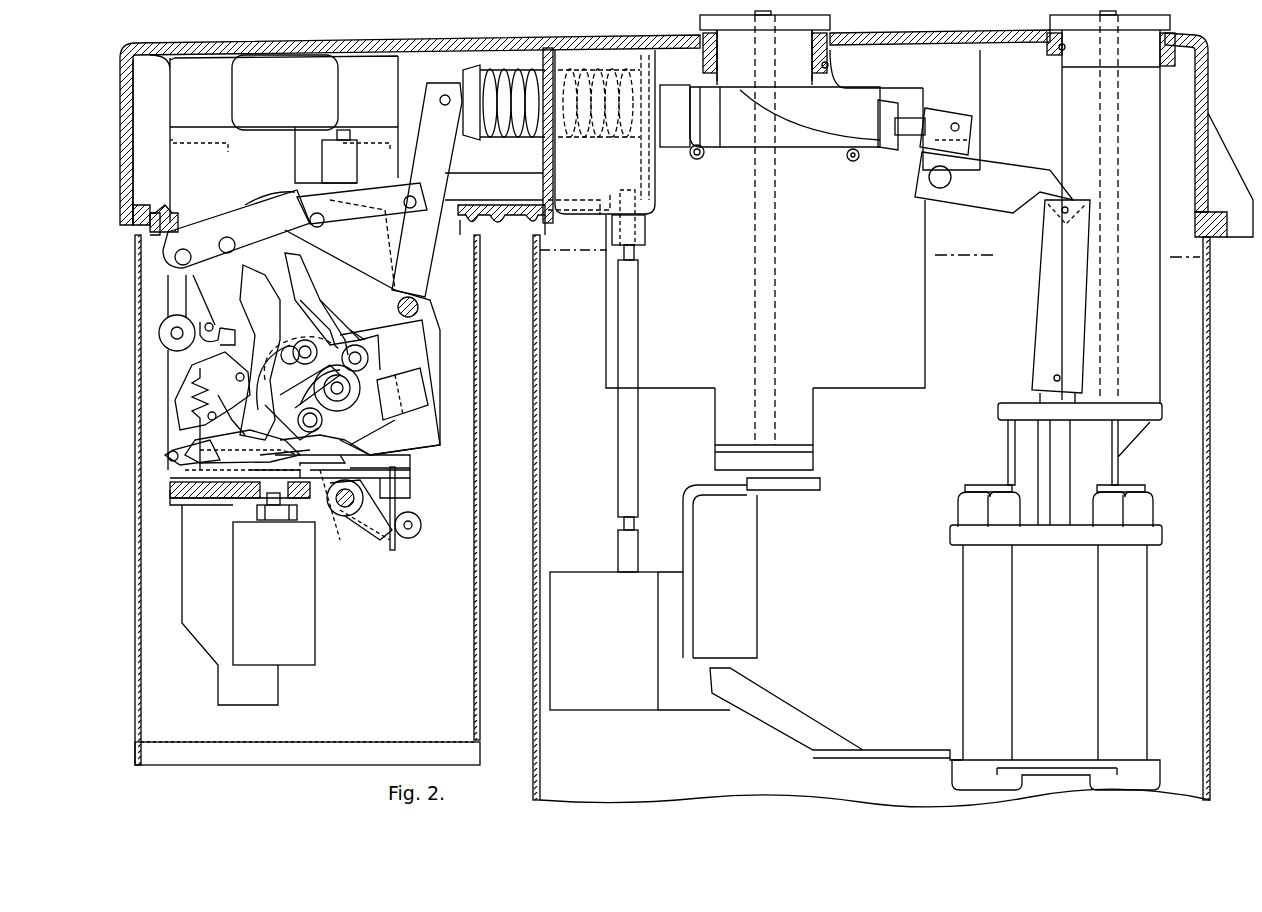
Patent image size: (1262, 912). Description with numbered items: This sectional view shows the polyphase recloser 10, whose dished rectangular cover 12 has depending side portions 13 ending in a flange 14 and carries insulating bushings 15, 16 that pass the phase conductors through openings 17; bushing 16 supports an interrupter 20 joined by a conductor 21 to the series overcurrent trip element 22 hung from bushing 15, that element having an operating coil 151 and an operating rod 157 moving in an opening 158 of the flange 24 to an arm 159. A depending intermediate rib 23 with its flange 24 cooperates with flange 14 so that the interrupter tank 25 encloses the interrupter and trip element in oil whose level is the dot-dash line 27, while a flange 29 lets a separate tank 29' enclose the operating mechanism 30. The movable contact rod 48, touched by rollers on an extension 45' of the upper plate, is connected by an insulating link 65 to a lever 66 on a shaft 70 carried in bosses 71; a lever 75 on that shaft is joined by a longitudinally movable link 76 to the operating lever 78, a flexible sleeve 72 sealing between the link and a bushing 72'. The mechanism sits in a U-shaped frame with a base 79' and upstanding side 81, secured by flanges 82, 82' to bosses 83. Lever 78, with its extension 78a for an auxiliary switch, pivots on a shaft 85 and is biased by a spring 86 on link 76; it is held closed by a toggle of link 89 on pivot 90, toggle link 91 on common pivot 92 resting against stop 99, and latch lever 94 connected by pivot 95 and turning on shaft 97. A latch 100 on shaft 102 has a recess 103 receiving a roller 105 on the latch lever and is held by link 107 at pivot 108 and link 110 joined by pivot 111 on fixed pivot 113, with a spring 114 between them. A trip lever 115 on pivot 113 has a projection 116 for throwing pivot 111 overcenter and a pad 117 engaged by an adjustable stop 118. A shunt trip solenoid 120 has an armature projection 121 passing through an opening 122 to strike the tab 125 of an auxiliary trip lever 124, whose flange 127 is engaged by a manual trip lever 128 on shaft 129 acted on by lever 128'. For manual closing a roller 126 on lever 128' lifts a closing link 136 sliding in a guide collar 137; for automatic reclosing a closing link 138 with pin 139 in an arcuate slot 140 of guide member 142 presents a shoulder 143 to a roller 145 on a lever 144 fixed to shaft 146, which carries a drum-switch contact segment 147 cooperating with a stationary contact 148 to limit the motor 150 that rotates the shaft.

The polyphase recloser 10 is at (515, 334).
The cover 12 is at (226, 42).
The depending side portions 13 is at (130, 140).
The flange 14 is at (148, 204).
The insulating bushing 15 is at (830, 22).
The insulating bushing 16 is at (1170, 25).
The openings 17 is at (828, 64).
The interrupter 20 is at (950, 644).
The conductor 21 is at (798, 716).
The series type overcurrent trip element 22 is at (616, 644).
The intermediate wall or rib 23 is at (690, 212).
The flange 24 is at (598, 222).
The interrupter tank 25 is at (1211, 355).
The oil level 27 is at (954, 255).
The flange 29 is at (501, 220).
The separate tank 29' is at (140, 335).
The operating mechanism 30 is at (462, 274).
The extension of upper plate 45' is at (1056, 472).
The movable contact rod 48 is at (1040, 400).
The insulating link 65 is at (1040, 300).
The lever 66 is at (988, 170).
The shaft 70 is at (951, 180).
The bosses 71 is at (976, 72).
The flexible sleeve 72 is at (770, 124).
The bushing 72' is at (682, 155).
The lever 75 is at (975, 115).
The longitudinally movable link 76 is at (898, 118).
The operating lever 78 is at (443, 147).
The lever extension 78a is at (345, 215).
The base 79' is at (159, 506).
The upstanding side 81 is at (170, 157).
The flanges 82 is at (201, 153).
The recess 82' is at (368, 153).
The bosses 83 is at (232, 85).
The shaft 85 is at (420, 305).
The spring 86 is at (504, 113).
The link 89 is at (390, 192).
The pivot 90 is at (410, 195).
The toggle link 91 is at (255, 200).
The common pivot 92 is at (309, 220).
The latch lever 94 is at (212, 218).
The pivot 95 is at (236, 243).
The shaft 97 is at (169, 372).
The stop 99 is at (300, 155).
The latch 100 is at (262, 283).
The shaft 102 is at (198, 300).
The recess 103 is at (210, 342).
The roller 105 is at (210, 320).
The link 107 is at (222, 390).
The pivot 108 is at (224, 365).
The link 110 is at (205, 418).
The pivot 111 is at (236, 412).
The fixed pivot 113 is at (177, 453).
The spring 114 is at (172, 419).
The trip lever 115 is at (247, 461).
The projection 116 is at (222, 425).
The laterally projecting pad 117 is at (310, 433).
The adjustable stop 118 is at (325, 438).
The shunt trip solenoid 120 is at (315, 578).
The projection 121 is at (222, 498).
The opening 122 is at (262, 504).
The auxiliary trip lever 124 is at (410, 478).
The laterally extending tab 125 is at (170, 482).
The roller 126 is at (421, 528).
The lateral projection or flange 127 is at (355, 458).
The manual trip lever 128 is at (355, 510).
The lever 128' is at (422, 508).
The shaft 129 is at (336, 511).
The closing link 136 is at (416, 430).
The guide collar 137 is at (430, 395).
The closing link 138 is at (305, 285).
The pin 139 is at (290, 345).
The arcuate slot 140 is at (275, 360).
The guide member 142 is at (303, 318).
The shoulder 143 is at (330, 321).
The lever 144 is at (368, 355).
The roller 145 is at (355, 326).
The shaft 146 is at (337, 395).
The contact segment 147 is at (390, 352).
The stationary contact member 148 is at (318, 352).
The motor 150 is at (184, 578).
The operating coil 151 is at (758, 537).
The operating rod 157 is at (617, 447).
The opening 158 is at (645, 232).
The arm 159 is at (505, 178).